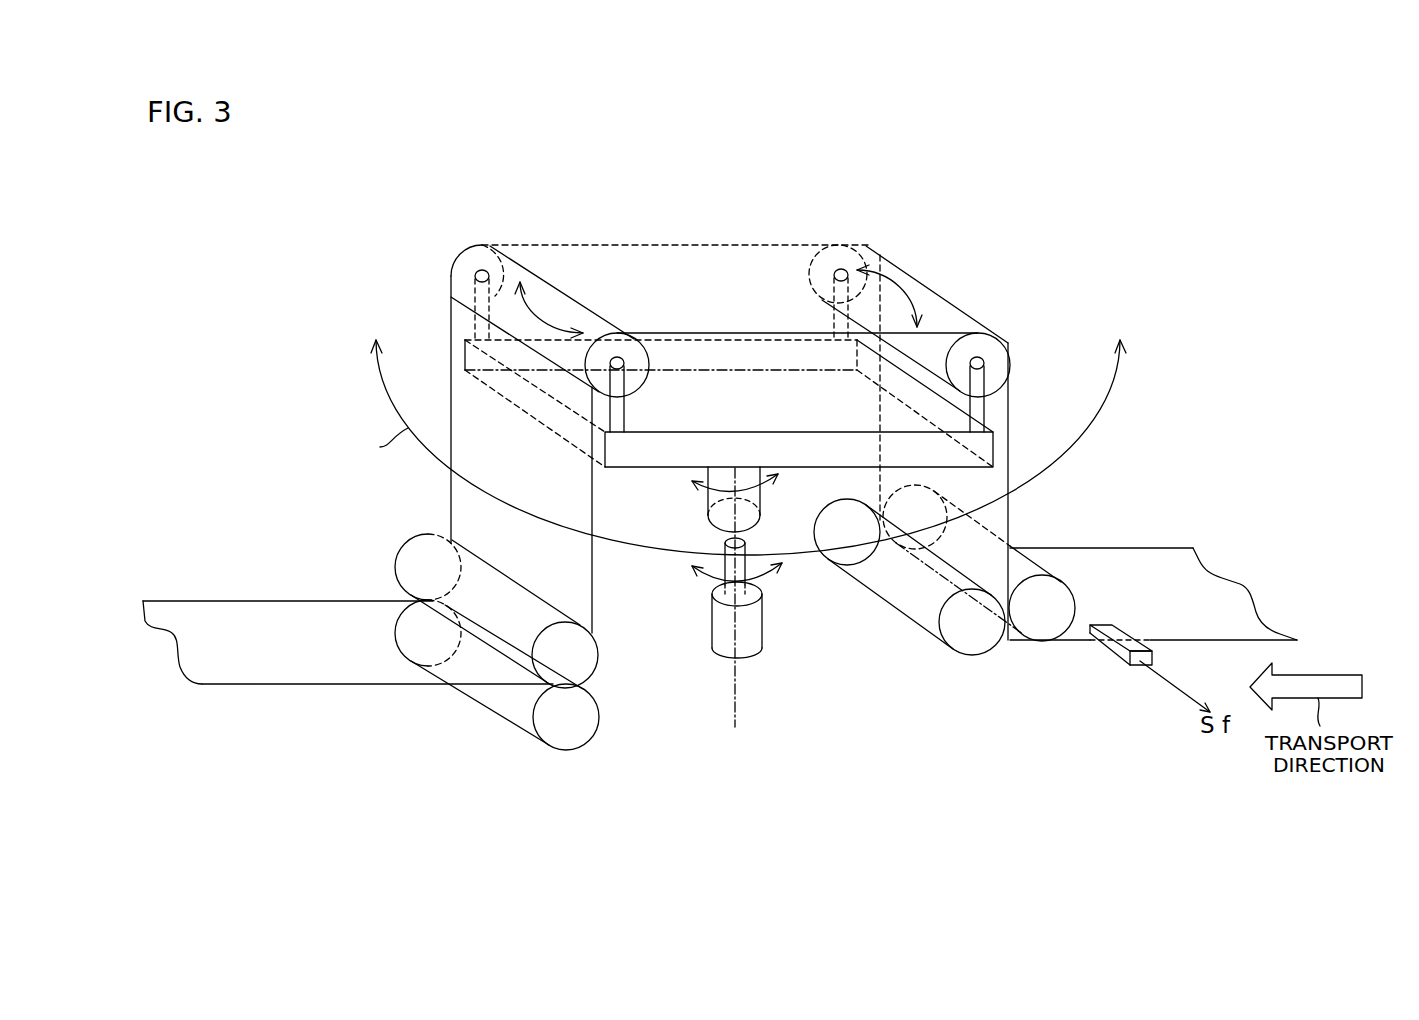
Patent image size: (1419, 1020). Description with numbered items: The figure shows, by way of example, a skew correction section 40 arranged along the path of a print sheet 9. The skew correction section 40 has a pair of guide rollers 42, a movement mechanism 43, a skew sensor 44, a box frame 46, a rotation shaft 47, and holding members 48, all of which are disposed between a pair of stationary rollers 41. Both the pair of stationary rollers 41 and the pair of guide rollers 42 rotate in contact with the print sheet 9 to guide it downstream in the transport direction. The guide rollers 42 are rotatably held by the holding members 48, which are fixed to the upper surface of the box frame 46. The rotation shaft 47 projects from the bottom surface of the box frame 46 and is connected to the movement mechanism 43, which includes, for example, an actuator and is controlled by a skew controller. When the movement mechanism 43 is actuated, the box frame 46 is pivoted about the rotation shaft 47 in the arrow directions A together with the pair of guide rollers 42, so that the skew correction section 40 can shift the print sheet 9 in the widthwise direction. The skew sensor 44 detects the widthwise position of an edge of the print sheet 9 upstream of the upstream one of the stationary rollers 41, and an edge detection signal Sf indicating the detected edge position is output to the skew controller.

The skew correction section 40 is at (1012, 195).
The stationary rollers 41 is at (596, 728).
The guide rollers 42 is at (650, 377).
The movement mechanism 43 is at (762, 630).
The skew sensor 44 is at (1153, 658).
The box frame 46 is at (995, 440).
The rotation shaft 47 is at (760, 498).
The holding members 48 is at (625, 405).
The print sheet 9 is at (1113, 548).